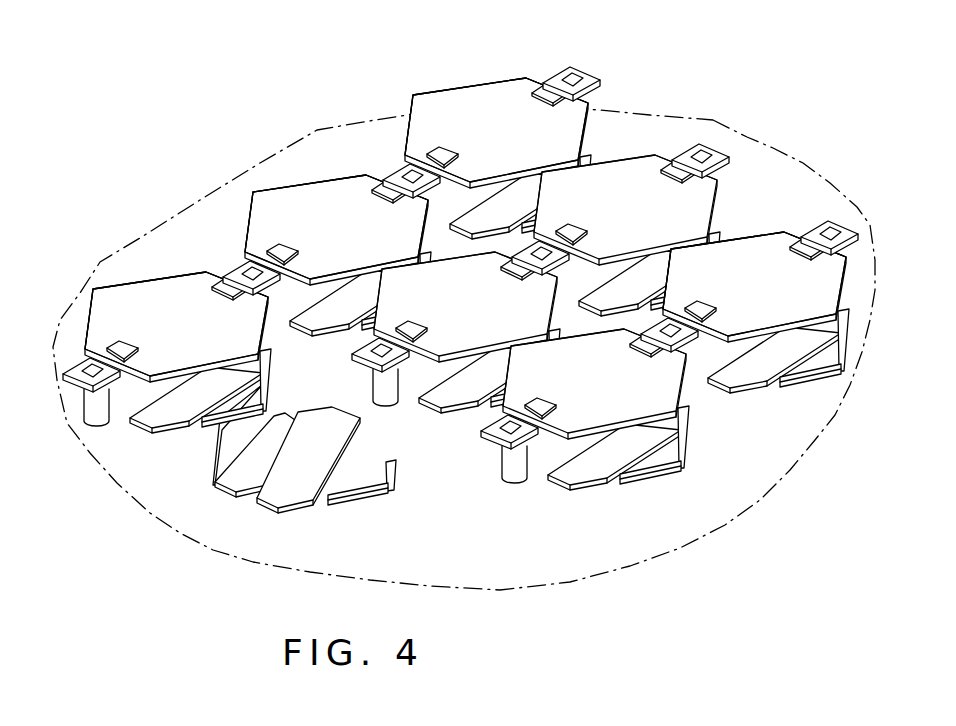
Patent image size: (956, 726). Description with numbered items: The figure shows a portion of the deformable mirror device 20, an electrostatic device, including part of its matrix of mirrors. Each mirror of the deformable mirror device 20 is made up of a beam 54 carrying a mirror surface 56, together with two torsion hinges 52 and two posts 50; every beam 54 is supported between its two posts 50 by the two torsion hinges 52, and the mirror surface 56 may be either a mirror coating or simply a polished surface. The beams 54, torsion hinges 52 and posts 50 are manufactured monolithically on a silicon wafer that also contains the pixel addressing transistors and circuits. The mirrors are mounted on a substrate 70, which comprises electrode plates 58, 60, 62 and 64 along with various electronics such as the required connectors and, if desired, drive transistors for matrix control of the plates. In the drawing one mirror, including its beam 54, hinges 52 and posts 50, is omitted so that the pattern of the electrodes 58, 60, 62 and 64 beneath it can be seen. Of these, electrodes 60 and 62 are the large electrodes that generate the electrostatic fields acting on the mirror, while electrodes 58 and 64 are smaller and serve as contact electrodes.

The deformable mirror device 20 is at (205, 600).
The posts 50 is at (578, 65).
The torsion hinges 52 is at (535, 92).
The beam 54 is at (440, 108).
The mirror surface 56 is at (495, 125).
The electrode plate 58 is at (233, 437).
The electrode plate 60 is at (284, 312).
The electrode plate 62 is at (372, 425).
The electrode plate 64 is at (370, 485).
The substrate 70 is at (768, 495).